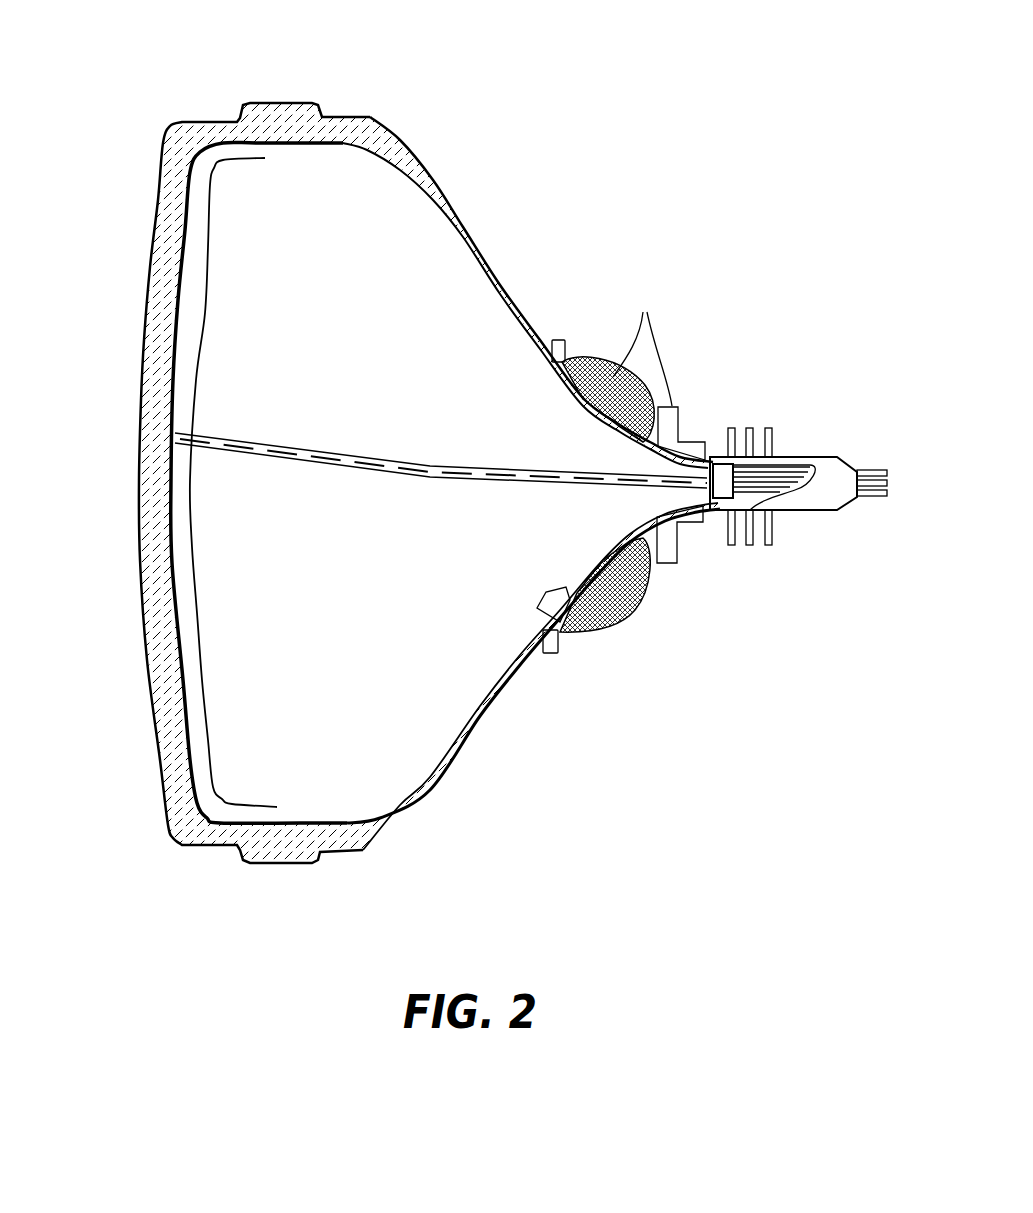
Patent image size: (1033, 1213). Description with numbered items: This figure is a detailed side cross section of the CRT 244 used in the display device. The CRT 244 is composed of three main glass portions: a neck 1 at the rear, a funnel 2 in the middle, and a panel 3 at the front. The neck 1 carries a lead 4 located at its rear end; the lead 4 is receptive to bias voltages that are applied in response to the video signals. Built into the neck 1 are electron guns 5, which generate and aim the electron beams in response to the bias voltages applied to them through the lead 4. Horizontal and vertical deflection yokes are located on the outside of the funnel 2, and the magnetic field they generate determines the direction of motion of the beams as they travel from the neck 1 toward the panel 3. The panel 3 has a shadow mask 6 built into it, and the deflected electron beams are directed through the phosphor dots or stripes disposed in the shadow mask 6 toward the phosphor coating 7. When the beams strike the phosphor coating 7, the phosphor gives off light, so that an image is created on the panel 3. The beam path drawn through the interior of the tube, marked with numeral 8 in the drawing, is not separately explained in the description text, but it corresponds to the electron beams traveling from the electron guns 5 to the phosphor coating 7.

The CRT 244 is at (640, 153).
The neck 1 is at (790, 457).
The funnel 2 is at (462, 227).
The panel 3 is at (142, 582).
The lead 4 is at (880, 497).
The electron guns 5 is at (777, 513).
The shadow mask 6 is at (208, 237).
The phosphor coating 7 is at (175, 363).
The electron beam 8 is at (402, 473).